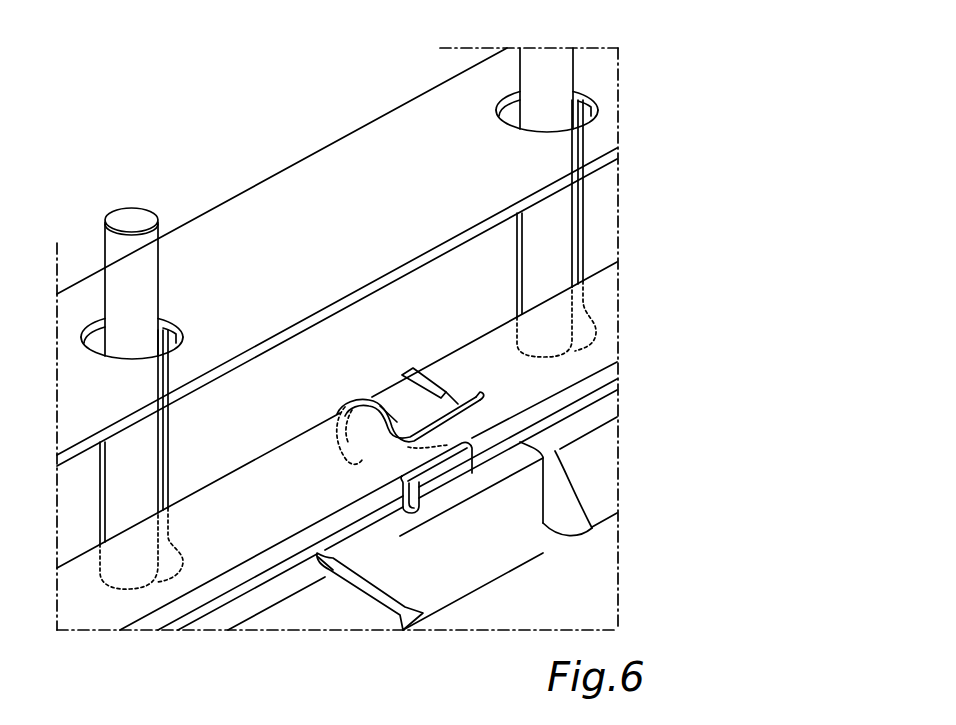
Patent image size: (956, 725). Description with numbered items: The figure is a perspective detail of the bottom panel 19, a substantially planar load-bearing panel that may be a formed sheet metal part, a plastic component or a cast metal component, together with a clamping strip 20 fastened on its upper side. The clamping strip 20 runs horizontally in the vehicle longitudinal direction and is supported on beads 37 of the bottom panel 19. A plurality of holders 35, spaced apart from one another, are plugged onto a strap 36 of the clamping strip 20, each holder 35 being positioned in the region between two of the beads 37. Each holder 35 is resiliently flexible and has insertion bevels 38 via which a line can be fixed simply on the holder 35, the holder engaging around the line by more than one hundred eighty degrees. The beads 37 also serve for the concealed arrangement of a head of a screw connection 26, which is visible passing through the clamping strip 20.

The bottom panel 19 is at (587, 592).
The clamping strip 20 is at (468, 298).
The screw connection 26 is at (560, 88).
The holder 35 is at (462, 482).
The strap 36 is at (382, 512).
The bead 37 is at (592, 440).
The insertion bevel 38 is at (483, 394).